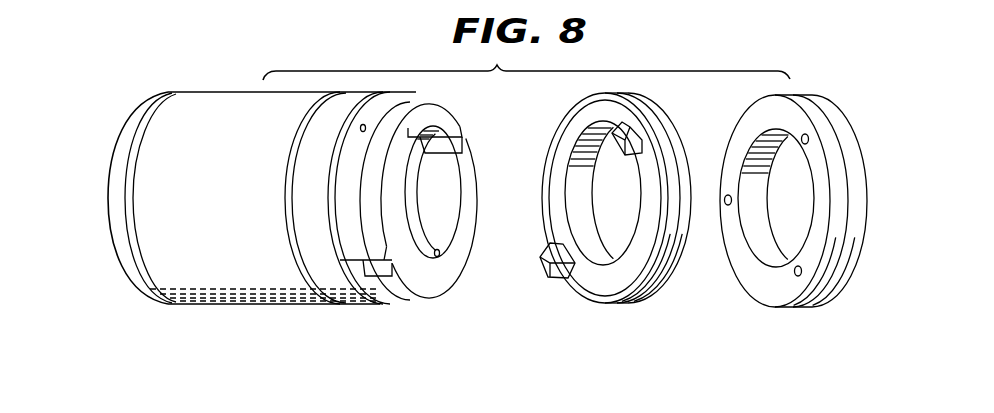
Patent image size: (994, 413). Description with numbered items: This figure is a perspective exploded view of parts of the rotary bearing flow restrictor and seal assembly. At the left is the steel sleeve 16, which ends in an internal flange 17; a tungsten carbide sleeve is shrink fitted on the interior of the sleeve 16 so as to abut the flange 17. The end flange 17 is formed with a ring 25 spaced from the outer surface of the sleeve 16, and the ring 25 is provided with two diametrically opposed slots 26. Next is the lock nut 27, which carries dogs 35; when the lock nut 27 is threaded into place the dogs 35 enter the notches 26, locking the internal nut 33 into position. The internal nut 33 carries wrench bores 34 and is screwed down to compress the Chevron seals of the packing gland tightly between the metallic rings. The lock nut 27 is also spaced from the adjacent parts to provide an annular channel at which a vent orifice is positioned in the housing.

The steel sleeve 16 is at (232, 203).
The internal flange 17 is at (413, 195).
The ring 25 is at (429, 298).
The slots 26 is at (460, 134).
The lock nut 27 is at (618, 300).
The internal nut 33 is at (807, 305).
The wrench bores 34 is at (810, 139).
The dogs 35 is at (626, 136).